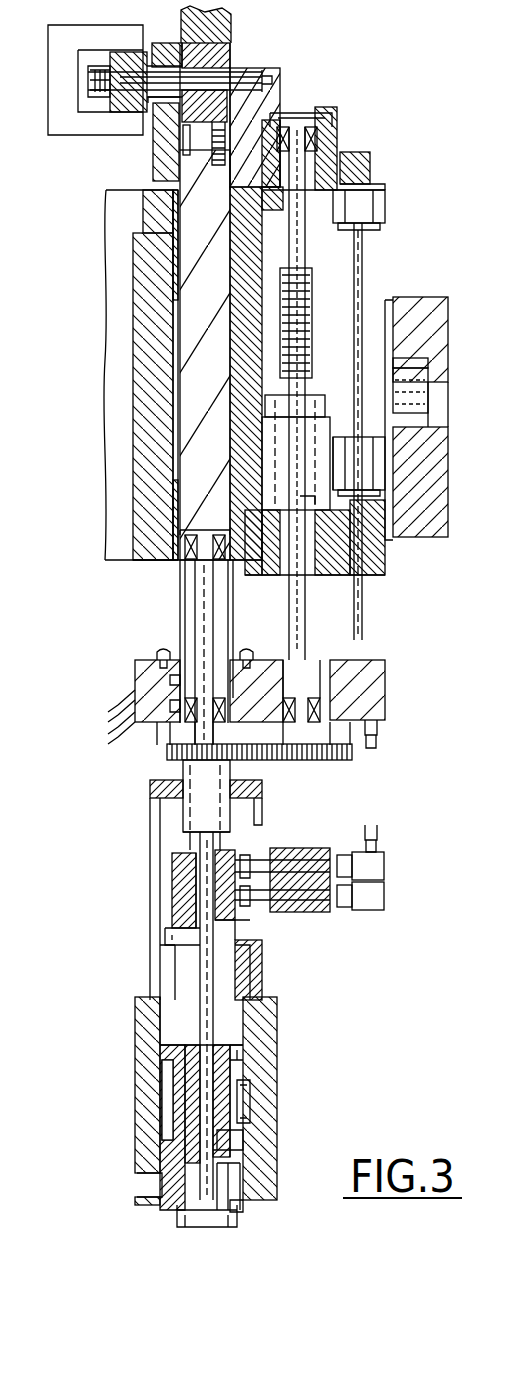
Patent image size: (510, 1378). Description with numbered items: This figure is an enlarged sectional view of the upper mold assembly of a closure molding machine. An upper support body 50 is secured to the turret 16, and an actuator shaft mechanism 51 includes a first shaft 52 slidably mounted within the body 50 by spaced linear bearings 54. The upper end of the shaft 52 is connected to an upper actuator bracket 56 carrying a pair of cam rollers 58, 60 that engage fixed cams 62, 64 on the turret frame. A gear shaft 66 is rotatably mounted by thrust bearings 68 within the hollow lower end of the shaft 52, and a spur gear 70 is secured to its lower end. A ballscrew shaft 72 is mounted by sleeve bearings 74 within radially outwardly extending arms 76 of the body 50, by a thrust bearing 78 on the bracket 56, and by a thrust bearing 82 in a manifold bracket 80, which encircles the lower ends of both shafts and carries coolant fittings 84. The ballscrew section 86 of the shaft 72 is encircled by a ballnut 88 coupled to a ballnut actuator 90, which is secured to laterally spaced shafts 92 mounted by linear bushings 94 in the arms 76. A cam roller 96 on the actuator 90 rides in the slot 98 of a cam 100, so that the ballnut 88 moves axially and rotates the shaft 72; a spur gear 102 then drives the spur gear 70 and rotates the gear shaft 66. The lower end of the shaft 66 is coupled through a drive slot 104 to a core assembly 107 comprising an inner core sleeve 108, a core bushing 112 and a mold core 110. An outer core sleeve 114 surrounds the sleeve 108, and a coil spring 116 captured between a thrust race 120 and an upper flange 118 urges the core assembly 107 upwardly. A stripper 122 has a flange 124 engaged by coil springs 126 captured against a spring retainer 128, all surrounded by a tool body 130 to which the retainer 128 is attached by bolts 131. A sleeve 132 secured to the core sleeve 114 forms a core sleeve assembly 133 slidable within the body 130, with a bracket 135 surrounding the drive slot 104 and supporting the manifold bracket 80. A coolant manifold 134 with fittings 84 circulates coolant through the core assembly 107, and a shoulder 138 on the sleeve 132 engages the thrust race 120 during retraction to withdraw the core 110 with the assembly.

The turret 16 is at (105, 362).
The upper bracket or support body 50 is at (142, 310).
The actuator shaft mechanism 51 is at (168, 628).
The first shaft 52 is at (190, 284).
The linear bearings 54 is at (175, 252).
The upper actuator bracket 56 is at (260, 112).
The cam roller 58 is at (243, 52).
The cam roller 60 is at (125, 105).
The fixed cam 62 is at (228, 22).
The fixed cam 64 is at (88, 30).
The gear shaft 66 is at (198, 598).
The thrust bearings 68 is at (190, 548).
The spur gear 70 is at (180, 750).
The ballscrew shaft 72 is at (305, 165).
The sleeve bearings 74 is at (338, 190).
The arms 76 is at (372, 188).
The thrust bearing 78 is at (316, 138).
The manifold bracket 80 is at (320, 668).
The thrust bearing 82 is at (320, 710).
The fittings 84 is at (380, 737).
The ballscrew section 86 is at (312, 278).
The ballnut 88 is at (330, 500).
The ballnut actuator 90 is at (400, 352).
The shafts 92 is at (364, 280).
The linear bushings 94 is at (387, 212).
The cam roller 96 is at (425, 365).
The slot 98 is at (432, 390).
The cam 100 is at (445, 474).
The spur gear 102 is at (348, 756).
The drive slot 104 is at (190, 810).
The core assembly 107 is at (190, 977).
The inner core sleeve 108 is at (195, 1058).
The mold core 110 is at (232, 1225).
The core bushing 112 is at (232, 1172).
The outer core sleeve 114 is at (180, 1110).
The coil spring 116 is at (236, 932).
The upper flange 118 is at (248, 1045).
The thrust race 120 is at (175, 920).
The stripper 122 is at (245, 1208).
The flange 124 is at (250, 1130).
The coil springs 126 is at (250, 1092).
The spring retainer 128 is at (252, 1065).
The tool body 130 is at (140, 1148).
The bolts 131 is at (165, 1090).
The sleeve 132 is at (158, 850).
The core sleeve assembly 133 is at (274, 980).
The coolant manifold 134 is at (320, 905).
The bracket 135 is at (262, 790).
The shoulder 138 is at (168, 942).